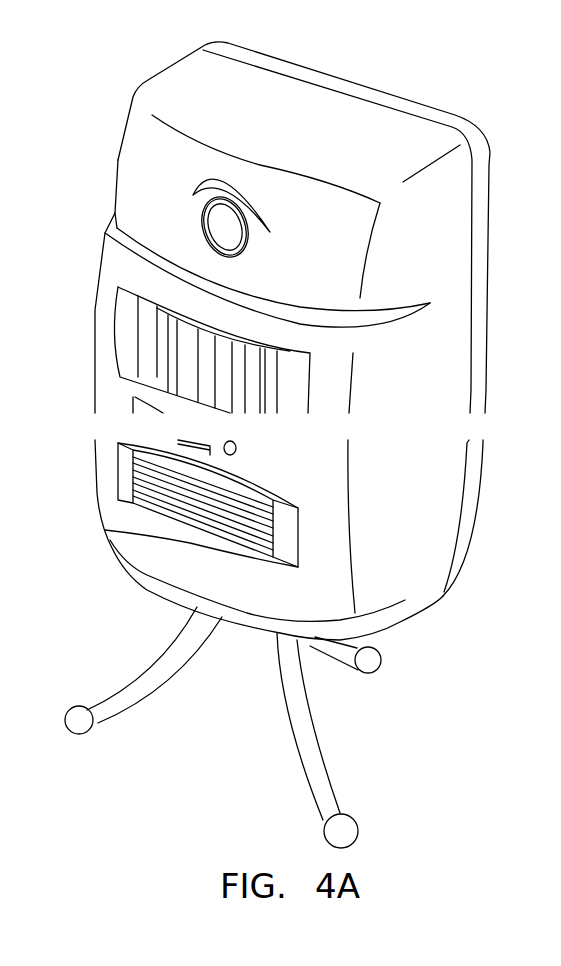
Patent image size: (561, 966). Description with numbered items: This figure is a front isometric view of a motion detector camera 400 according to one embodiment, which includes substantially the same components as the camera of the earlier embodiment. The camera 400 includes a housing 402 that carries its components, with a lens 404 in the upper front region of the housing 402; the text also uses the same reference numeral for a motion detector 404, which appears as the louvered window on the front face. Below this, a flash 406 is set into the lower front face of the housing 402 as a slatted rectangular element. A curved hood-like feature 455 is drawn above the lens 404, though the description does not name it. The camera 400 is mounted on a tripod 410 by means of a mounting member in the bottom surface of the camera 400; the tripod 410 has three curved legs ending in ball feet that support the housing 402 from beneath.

The camera 400 is at (420, 80).
The housing 402 is at (120, 181).
The lens 404 is at (203, 220).
The lens hood 455 is at (260, 205).
The flash 406 is at (127, 480).
The tripod 410 is at (312, 725).